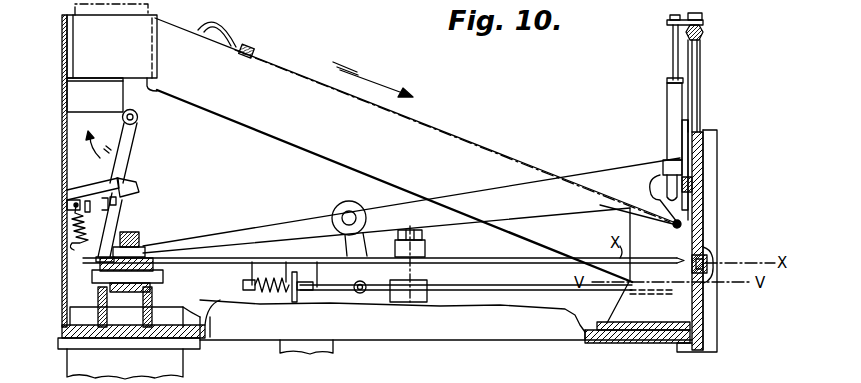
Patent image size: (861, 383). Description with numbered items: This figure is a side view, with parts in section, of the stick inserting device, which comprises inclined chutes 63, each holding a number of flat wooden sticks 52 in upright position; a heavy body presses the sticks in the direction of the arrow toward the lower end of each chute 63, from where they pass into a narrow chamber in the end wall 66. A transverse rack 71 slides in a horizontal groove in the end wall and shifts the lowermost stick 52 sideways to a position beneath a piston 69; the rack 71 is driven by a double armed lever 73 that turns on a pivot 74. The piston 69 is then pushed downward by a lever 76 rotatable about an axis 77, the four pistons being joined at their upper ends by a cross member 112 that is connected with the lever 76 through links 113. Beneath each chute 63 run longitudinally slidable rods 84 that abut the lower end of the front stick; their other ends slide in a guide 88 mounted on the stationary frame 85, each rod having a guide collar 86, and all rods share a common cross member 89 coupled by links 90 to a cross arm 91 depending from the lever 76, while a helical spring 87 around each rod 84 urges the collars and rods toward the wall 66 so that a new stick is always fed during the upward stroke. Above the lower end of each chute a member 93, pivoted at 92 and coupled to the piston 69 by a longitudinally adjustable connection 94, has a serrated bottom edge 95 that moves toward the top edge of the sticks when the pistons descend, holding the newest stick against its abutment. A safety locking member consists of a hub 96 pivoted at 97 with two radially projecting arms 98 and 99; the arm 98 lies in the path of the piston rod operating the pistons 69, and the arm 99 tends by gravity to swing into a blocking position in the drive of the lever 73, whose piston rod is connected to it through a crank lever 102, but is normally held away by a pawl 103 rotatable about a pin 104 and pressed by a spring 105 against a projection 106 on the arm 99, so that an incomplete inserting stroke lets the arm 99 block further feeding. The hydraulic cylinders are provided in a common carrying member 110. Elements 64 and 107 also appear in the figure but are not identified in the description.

The stick 52 is at (253, 50).
The inclined chute 63 is at (440, 143).
The roller 64 is at (216, 25).
The end wall 66 is at (684, 170).
The piston 69 is at (705, 112).
The rack 71 is at (708, 262).
The double armed lever 73 is at (512, 258).
The pivot 74 is at (425, 250).
The lever 76 is at (593, 175).
The axis 77 is at (349, 202).
The rod 84 is at (508, 290).
The stationary frame 85 is at (210, 310).
The guide collar 86 is at (303, 288).
The helical spring 87 is at (268, 293).
The guide 88 is at (286, 262).
The cross member 89 is at (252, 262).
The link 90 is at (317, 262).
The cross arm 91 is at (363, 257).
The pivot 92 is at (700, 188).
The member 93 is at (667, 170).
The longitudinally adjustable connection 94 is at (668, 90).
The bottom edge 95 is at (652, 175).
The hub 96 is at (139, 117).
The pivot 97 is at (140, 125).
The arm 98 is at (110, 160).
The arm 99 is at (115, 176).
The crank lever 102 is at (140, 235).
The pawl 103 is at (130, 181).
The pin 104 is at (67, 203).
The spring 105 is at (72, 222).
The projection 106 is at (110, 212).
The pin 107 is at (118, 200).
The common carrying member 110 is at (74, 366).
The cross member 112 is at (705, 36).
The link 113 is at (674, 52).